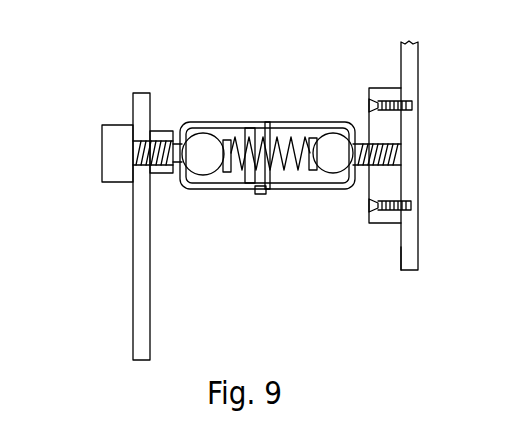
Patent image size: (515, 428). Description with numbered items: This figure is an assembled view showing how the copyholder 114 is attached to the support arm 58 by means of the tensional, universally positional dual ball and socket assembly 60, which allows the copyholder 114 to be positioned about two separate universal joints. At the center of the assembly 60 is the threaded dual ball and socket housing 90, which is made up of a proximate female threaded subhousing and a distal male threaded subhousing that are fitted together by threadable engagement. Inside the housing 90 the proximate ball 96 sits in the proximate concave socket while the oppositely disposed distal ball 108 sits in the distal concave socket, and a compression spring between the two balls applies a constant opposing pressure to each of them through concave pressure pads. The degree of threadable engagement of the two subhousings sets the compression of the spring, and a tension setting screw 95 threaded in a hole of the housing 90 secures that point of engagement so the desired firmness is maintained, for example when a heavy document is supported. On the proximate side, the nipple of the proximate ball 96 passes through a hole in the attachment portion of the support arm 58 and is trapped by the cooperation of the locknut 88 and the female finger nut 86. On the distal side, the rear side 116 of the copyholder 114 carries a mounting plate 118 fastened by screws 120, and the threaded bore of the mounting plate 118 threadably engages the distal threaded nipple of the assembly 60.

The support arm 58 is at (119, 263).
The female finger nut 86 is at (116, 125).
The locknut 88 is at (163, 131).
The dual ball and socket assembly 60 is at (265, 101).
The proximate ball 96 is at (202, 165).
The threaded dual ball and socket housing 90 is at (284, 203).
The tension setting screw 95 is at (258, 196).
The distal ball 108 is at (334, 162).
The copyholder 114 is at (415, 78).
The mounting plate 118 is at (420, 130).
The screws 120 is at (411, 205).
The rear side 116 is at (400, 247).